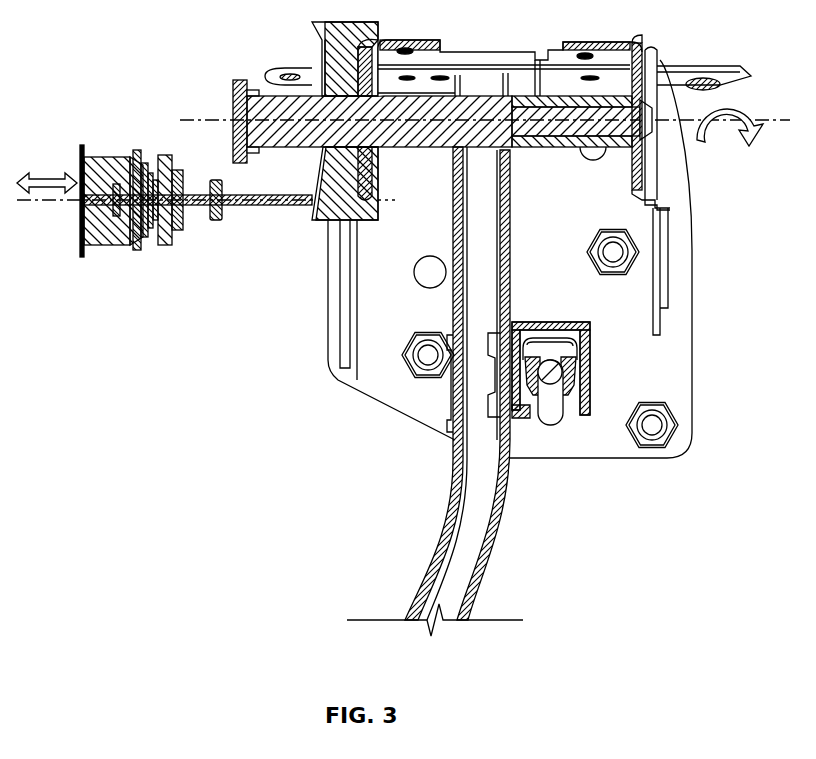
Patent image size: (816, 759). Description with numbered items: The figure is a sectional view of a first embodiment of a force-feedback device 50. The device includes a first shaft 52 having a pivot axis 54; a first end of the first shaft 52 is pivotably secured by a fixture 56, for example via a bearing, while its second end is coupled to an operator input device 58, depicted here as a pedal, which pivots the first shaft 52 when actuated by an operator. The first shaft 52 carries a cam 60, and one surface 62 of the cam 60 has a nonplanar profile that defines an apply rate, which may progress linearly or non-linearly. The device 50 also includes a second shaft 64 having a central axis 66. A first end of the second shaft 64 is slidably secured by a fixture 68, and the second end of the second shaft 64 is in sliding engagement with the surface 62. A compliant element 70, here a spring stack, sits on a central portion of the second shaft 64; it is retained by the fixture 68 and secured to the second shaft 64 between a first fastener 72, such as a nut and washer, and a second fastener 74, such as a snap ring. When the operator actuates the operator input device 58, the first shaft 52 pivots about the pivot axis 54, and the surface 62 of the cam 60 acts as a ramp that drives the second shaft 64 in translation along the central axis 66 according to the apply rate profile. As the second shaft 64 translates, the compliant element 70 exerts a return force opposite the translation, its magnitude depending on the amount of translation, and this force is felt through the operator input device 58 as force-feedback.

The force-feedback device 50 is at (84, 98).
The first shaft 52 is at (403, 148).
The pivot axis 54 is at (678, 122).
The fixture 56 is at (240, 100).
The operator input device 58 is at (450, 506).
The cam 60 is at (368, 220).
The surface 62 is at (313, 66).
The second shaft 64 is at (265, 208).
The central axis 66 is at (50, 206).
The fixture 68 is at (105, 247).
The compliant element 70 is at (140, 251).
The first fastener 72 is at (180, 233).
The second fastener 74 is at (135, 188).